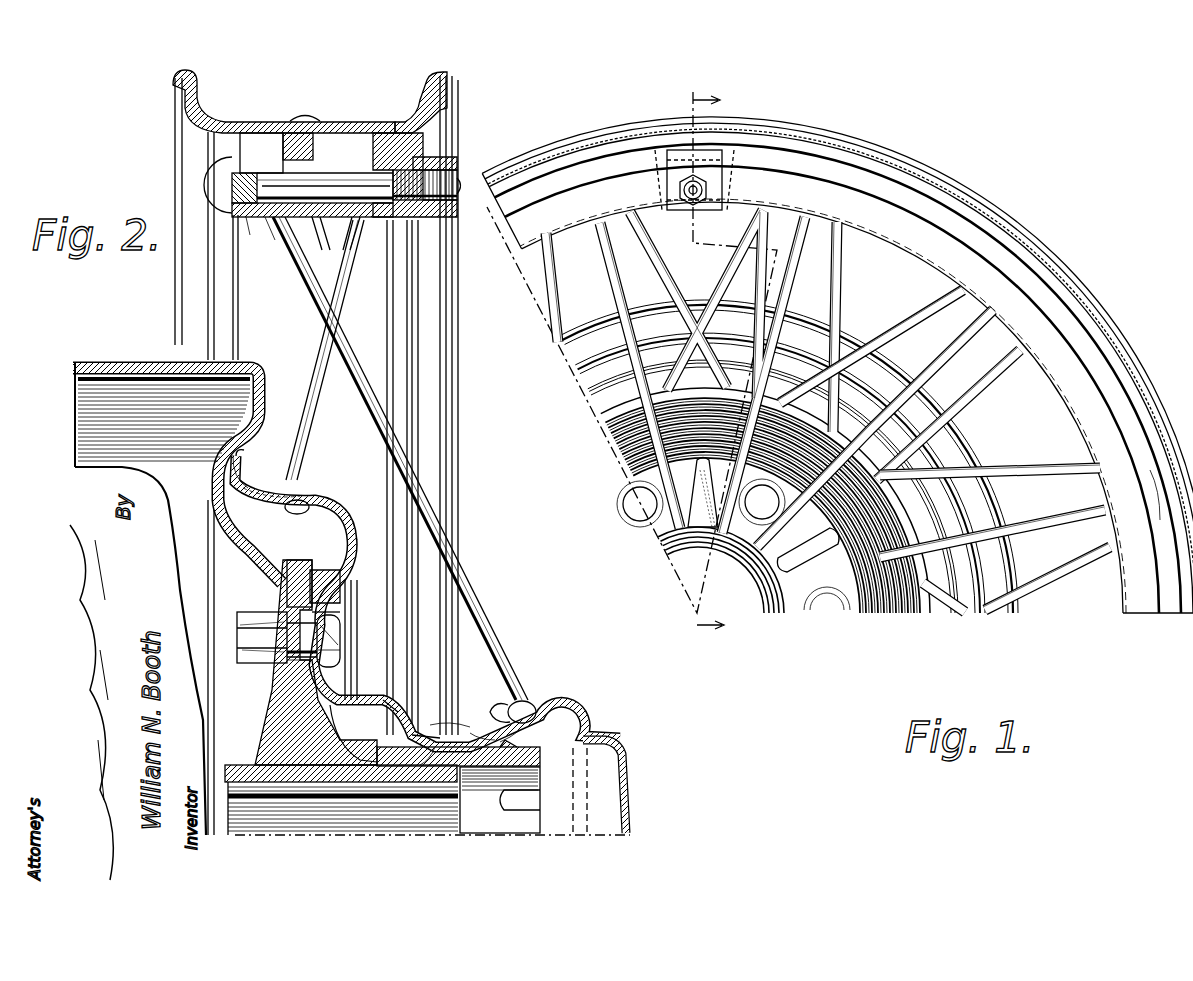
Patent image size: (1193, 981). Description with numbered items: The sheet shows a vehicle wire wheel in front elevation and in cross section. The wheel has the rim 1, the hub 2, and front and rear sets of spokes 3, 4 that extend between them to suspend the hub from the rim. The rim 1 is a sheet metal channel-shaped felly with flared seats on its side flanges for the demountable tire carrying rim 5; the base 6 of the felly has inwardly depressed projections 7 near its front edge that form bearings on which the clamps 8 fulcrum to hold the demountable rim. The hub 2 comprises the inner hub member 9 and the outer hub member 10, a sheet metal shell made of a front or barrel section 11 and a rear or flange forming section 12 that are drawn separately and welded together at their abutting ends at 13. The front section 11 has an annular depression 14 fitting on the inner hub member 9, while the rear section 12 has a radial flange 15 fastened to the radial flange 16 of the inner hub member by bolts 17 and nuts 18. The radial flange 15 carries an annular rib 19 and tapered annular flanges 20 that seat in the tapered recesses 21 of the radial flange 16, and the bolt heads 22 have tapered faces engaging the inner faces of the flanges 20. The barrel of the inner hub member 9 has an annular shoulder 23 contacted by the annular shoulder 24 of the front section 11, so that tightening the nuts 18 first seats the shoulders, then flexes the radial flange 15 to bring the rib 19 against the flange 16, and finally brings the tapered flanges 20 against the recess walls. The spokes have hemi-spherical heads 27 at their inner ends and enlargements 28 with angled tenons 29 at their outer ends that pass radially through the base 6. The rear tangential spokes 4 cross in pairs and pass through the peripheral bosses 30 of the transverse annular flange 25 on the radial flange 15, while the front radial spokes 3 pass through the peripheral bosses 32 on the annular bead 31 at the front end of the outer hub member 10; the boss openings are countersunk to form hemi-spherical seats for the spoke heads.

In FIG. 2, the rim 1 is at (250, 222).
In FIG. 1, the rim 1 is at (925, 255).
In FIG. 2, the hub 2 is at (240, 766).
In FIG. 1, the hub 2 is at (632, 363).
In FIG. 2, the front set of spokes 3 is at (385, 418).
In FIG. 1, the front set of spokes 3 is at (925, 372).
In FIG. 2, the rear set of spokes 4 is at (313, 378).
In FIG. 1, the rear set of spokes 4 is at (1000, 468).
In FIG. 2, the demountable tire carrying rim 5 is at (268, 126).
In FIG. 1, the demountable tire carrying rim 5 is at (965, 192).
In FIG. 2, the base 6 is at (312, 217).
In FIG. 1, the base 6 is at (835, 238).
In FIG. 2, the inwardly depressed projections 7 is at (372, 224).
In FIG. 2, the clamps 8 is at (410, 225).
In FIG. 1, the clamps 8 is at (686, 210).
In FIG. 2, the inner hub member 9 is at (418, 782).
In FIG. 2, the outer hub member 10 is at (440, 722).
In FIG. 1, the outer hub member 10 is at (770, 616).
In FIG. 2, the front or barrel section 11 is at (502, 733).
In FIG. 2, the rear or flange forming section 12 is at (395, 700).
In FIG. 2, the welded abutting ends 13 is at (400, 735).
In FIG. 2, the annular depression 14 is at (366, 640).
In FIG. 2, the radial flange 15 is at (344, 603).
In FIG. 2, the radial flange 16 is at (298, 568).
In FIG. 2, the bolts 17 is at (262, 640).
In FIG. 2, the nuts 18 is at (252, 612).
In FIG. 2, the annular rib 19 is at (344, 583).
In FIG. 2, the tapered annular flanges 20 is at (343, 626).
In FIG. 2, the recesses 21 is at (302, 666).
In FIG. 2, the bolt heads 22 is at (322, 650).
In FIG. 2, the annular shoulder 23 is at (380, 744).
In FIG. 2, the annular shoulder 24 is at (480, 730).
In FIG. 2, the transverse annular flange 25 is at (320, 498).
In FIG. 2, the hemi-spherical heads 27 is at (303, 495).
In FIG. 2, the enlargements 28 is at (276, 222).
In FIG. 2, the tenons 29 is at (315, 183).
In FIG. 2, the peripheral bosses 30 is at (264, 482).
In FIG. 1, the peripheral bosses 30 is at (946, 526).
In FIG. 2, the annular bead 31 is at (582, 700).
In FIG. 2, the peripheral bosses 32 is at (528, 703).